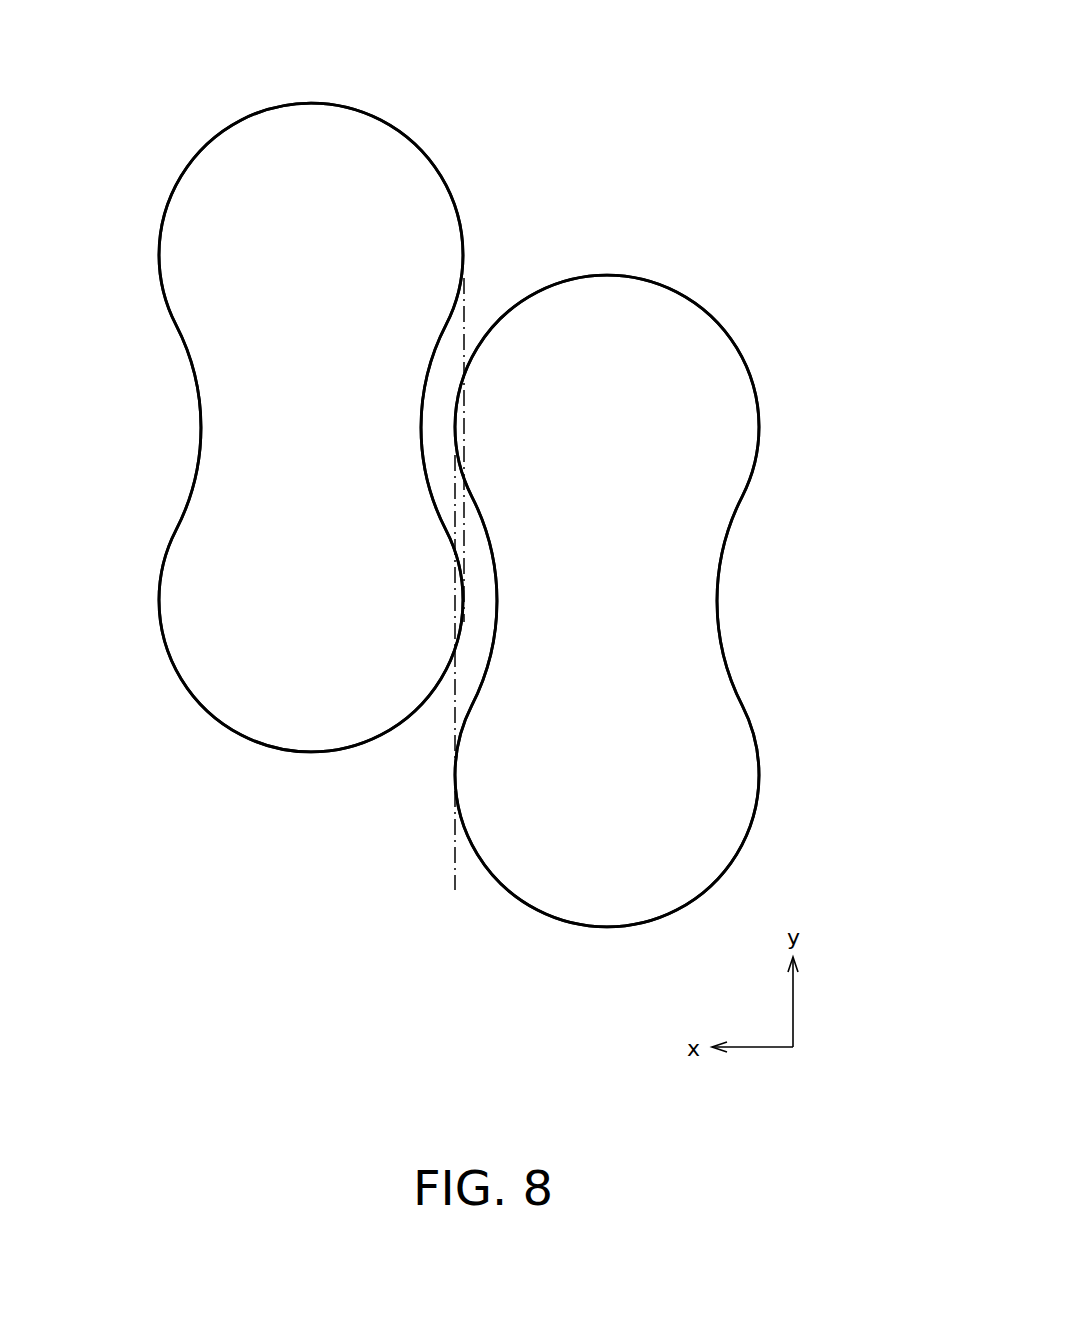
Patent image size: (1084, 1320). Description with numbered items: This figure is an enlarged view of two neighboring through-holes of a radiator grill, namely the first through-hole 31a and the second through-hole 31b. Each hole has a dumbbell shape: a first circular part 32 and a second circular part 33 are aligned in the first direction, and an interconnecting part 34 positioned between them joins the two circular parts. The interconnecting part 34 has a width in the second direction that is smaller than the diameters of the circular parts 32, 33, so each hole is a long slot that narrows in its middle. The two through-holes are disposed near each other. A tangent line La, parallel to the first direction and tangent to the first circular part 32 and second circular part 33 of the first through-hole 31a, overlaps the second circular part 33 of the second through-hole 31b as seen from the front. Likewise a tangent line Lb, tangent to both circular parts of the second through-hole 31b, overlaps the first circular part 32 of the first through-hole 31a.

The first through-hole 31a is at (700, 385).
The second through-hole 31b is at (244, 228).
The first circular part 32 is at (357, 107).
The second circular part 33 is at (296, 752).
The interconnecting part 34 is at (203, 399).
The tangent line La is at (455, 720).
The tangent line Lb is at (465, 312).